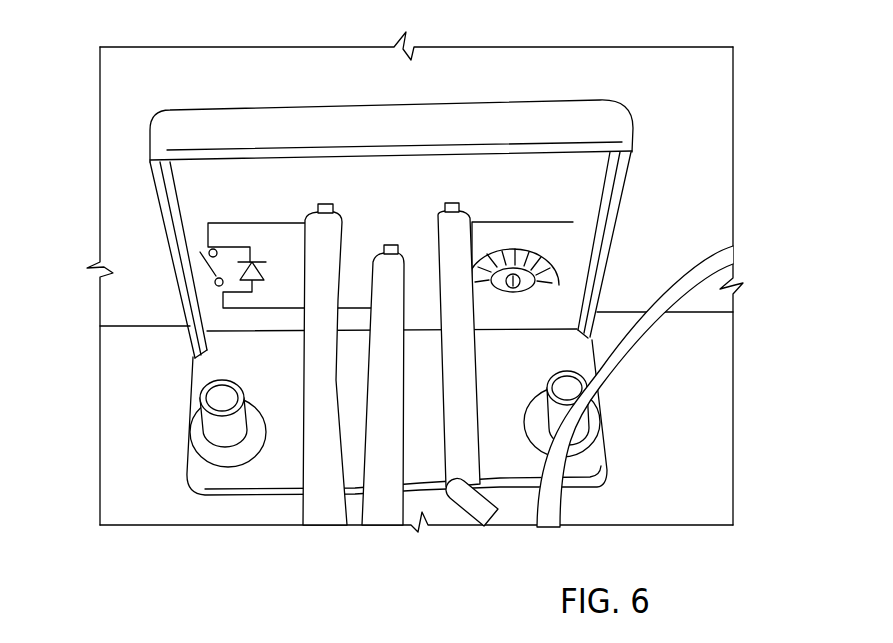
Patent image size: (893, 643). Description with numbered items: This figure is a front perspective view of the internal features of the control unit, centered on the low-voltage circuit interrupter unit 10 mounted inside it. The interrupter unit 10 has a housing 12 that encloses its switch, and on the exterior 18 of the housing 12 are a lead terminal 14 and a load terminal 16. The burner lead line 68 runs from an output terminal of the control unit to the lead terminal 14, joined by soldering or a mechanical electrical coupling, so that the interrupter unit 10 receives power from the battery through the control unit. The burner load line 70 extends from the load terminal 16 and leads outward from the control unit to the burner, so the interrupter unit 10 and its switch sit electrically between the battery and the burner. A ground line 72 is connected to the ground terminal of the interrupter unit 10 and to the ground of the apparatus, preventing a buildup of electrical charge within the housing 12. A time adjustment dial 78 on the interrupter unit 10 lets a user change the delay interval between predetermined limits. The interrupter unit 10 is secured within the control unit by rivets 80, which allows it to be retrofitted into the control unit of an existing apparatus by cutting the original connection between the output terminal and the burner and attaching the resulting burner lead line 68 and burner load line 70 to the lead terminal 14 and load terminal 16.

The low-voltage circuit interrupter unit 10 is at (663, 113).
The housing 12 is at (547, 118).
The lead terminal 14 is at (322, 203).
The load terminal 16 is at (389, 245).
The exterior 18 is at (581, 167).
The burner lead line 68 is at (316, 505).
The burner load line 70 is at (386, 508).
The ground line 72 is at (478, 512).
The time adjustment dial 78 is at (520, 288).
The rivets 80 is at (203, 446).